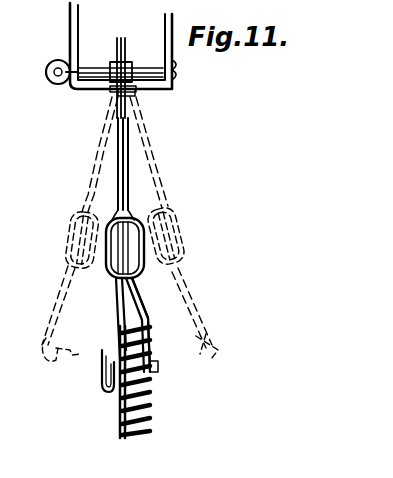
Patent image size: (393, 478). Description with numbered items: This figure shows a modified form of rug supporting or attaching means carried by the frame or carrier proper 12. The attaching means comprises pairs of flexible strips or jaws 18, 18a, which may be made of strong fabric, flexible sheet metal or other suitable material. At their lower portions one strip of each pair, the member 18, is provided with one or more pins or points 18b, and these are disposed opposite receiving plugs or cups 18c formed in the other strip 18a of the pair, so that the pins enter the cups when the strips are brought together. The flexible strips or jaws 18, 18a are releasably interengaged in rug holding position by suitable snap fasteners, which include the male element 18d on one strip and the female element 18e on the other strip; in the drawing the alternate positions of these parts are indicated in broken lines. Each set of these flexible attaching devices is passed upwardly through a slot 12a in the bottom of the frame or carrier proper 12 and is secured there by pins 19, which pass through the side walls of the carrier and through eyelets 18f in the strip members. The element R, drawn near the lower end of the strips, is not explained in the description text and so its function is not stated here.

The frame or carrier proper 12 is at (70, 13).
The slot 12a is at (116, 92).
The pins 19 is at (91, 68).
The flexible strip or jaw 18 is at (113, 309).
The flexible strip or jaw 18a is at (140, 304).
The pins or points 18b is at (112, 392).
The receiving plugs or cups 18c is at (160, 368).
The male snap fastener element 18d is at (186, 228).
The female snap fastener element 18e is at (196, 228).
The eyelets 18f is at (136, 61).
The spring R is at (118, 424).